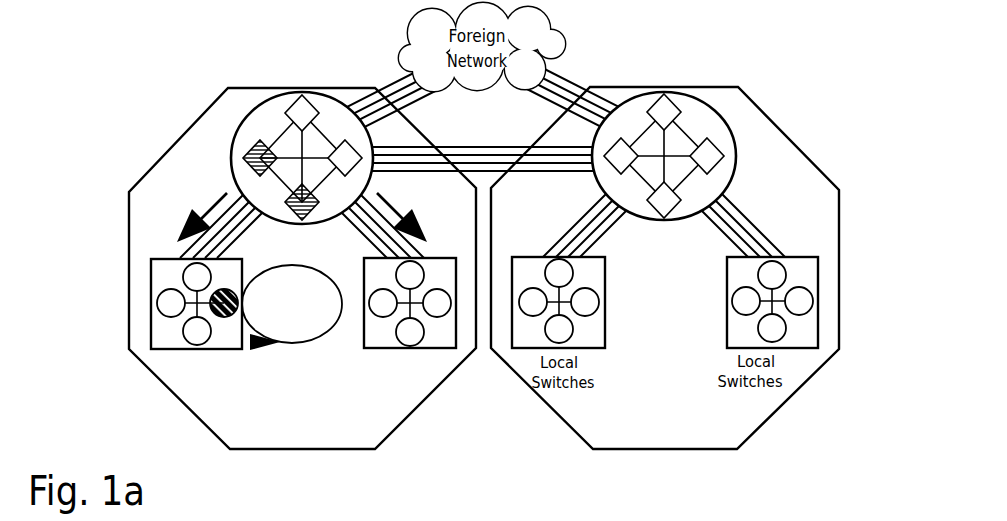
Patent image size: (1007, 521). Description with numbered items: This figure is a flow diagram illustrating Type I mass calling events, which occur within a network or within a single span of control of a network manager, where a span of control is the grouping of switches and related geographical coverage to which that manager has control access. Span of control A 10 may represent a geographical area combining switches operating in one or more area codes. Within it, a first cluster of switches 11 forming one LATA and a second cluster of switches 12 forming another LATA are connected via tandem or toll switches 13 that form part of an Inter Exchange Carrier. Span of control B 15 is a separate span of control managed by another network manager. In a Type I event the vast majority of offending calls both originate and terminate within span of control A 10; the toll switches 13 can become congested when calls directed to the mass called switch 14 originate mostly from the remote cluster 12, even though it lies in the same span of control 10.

The span of control A 10 is at (220, 403).
The first cluster of switches 11 is at (160, 280).
The second cluster of switches 12 is at (445, 338).
The toll switches 13 is at (275, 117).
The mass called switch 14 is at (237, 343).
The span of control B 15 is at (772, 407).